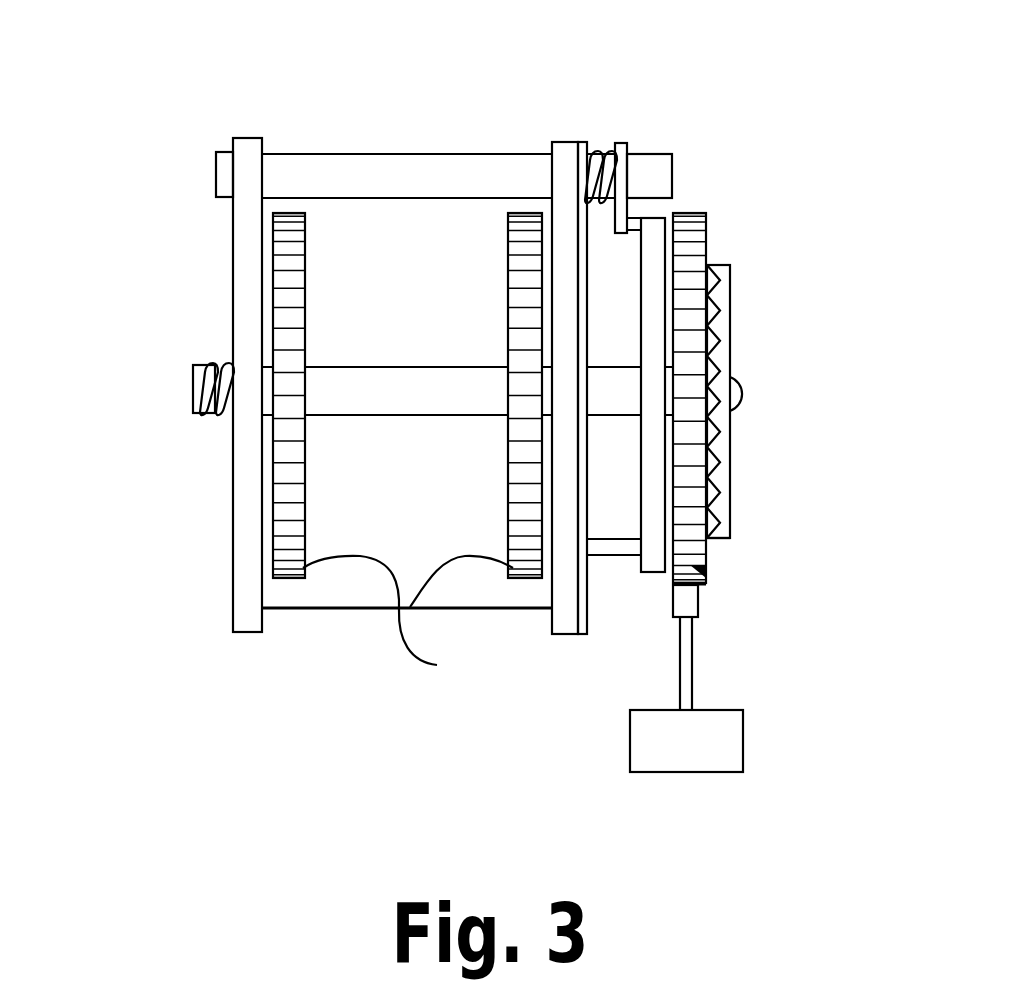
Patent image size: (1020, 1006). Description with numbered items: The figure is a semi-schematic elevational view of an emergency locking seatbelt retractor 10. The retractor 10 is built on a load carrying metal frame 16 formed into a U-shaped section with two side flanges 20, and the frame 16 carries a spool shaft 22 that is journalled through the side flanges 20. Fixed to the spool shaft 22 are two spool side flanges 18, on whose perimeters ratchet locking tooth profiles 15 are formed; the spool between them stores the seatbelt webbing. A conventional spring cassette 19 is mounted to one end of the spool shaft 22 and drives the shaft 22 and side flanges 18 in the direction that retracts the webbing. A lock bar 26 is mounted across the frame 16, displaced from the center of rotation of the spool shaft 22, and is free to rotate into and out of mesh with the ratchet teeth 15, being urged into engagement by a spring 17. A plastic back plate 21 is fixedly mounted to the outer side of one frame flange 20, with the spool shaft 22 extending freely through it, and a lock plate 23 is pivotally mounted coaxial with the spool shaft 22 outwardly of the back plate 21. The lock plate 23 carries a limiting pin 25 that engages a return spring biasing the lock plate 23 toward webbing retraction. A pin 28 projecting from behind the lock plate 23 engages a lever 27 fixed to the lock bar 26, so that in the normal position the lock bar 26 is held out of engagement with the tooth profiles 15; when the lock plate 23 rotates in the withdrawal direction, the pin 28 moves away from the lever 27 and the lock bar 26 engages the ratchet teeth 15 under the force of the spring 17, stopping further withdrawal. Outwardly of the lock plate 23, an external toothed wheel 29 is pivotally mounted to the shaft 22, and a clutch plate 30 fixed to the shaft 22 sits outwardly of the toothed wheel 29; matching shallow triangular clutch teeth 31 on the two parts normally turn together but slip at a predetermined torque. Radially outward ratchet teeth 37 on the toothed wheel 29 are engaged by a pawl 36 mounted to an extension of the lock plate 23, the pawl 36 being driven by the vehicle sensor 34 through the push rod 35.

The emergency locking seatbelt retractor 10 is at (80, 74).
The ratchet locking tooth profiles 15 is at (285, 523).
The load carrying metal frame 16 is at (336, 590).
The spring 17 is at (597, 152).
The spool side flanges 18 is at (408, 622).
The spring cassette 19 is at (213, 363).
The side flanges 20 is at (233, 612).
The back plate 21 is at (588, 622).
The spool shaft 22 is at (375, 367).
The lock plate 23 is at (655, 575).
The limiting pin 25 is at (605, 557).
The lock bar 26 is at (373, 153).
The lever 27 is at (623, 150).
The pin 28 is at (635, 222).
The external toothed wheel 29 is at (707, 245).
The clutch plate 30 is at (730, 468).
The clutch teeth 31 is at (712, 540).
The vehicle sensor 34 is at (671, 762).
The push rod 35 is at (693, 665).
The pawl 36 is at (699, 600).
The ratchet teeth 37 is at (706, 568).